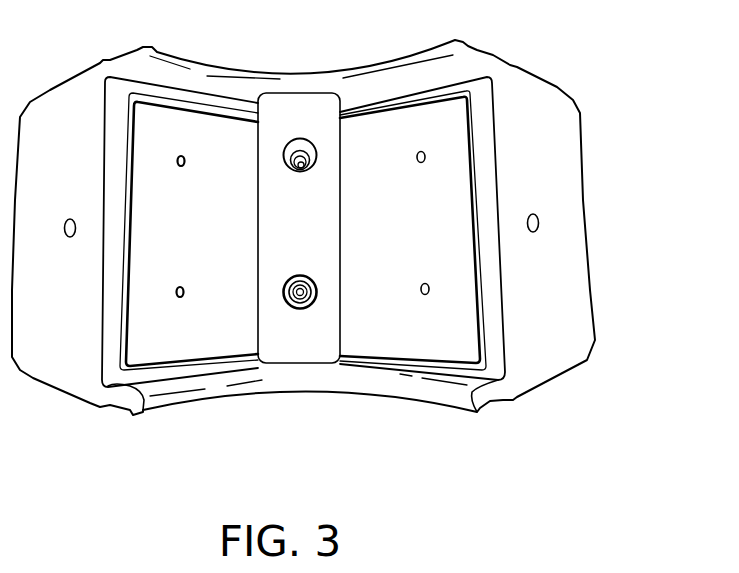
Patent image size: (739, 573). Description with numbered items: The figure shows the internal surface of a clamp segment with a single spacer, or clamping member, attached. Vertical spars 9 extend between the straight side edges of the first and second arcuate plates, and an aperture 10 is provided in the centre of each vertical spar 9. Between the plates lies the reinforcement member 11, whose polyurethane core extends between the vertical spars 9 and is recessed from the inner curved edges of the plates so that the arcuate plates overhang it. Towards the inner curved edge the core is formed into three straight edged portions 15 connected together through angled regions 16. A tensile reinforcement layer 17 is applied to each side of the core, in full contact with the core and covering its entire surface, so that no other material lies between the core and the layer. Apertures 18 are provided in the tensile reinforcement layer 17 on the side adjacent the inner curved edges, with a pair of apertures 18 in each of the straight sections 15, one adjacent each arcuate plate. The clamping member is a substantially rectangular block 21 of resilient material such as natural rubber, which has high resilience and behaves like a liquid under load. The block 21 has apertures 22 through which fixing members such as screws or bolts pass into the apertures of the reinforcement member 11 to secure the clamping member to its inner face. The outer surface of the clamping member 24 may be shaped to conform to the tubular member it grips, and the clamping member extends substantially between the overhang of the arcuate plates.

The vertical spar 9 is at (558, 313).
The aperture 10 is at (540, 223).
The reinforcement member 11 is at (367, 318).
The straight edged portion 15 is at (167, 243).
The angled region 16 is at (235, 105).
The tensile reinforcement layer 17 is at (168, 333).
The aperture 18 is at (427, 157).
The rectangular block 21 is at (287, 343).
The aperture 22 is at (341, 231).
The outer surface of the clamping member 24 is at (310, 200).